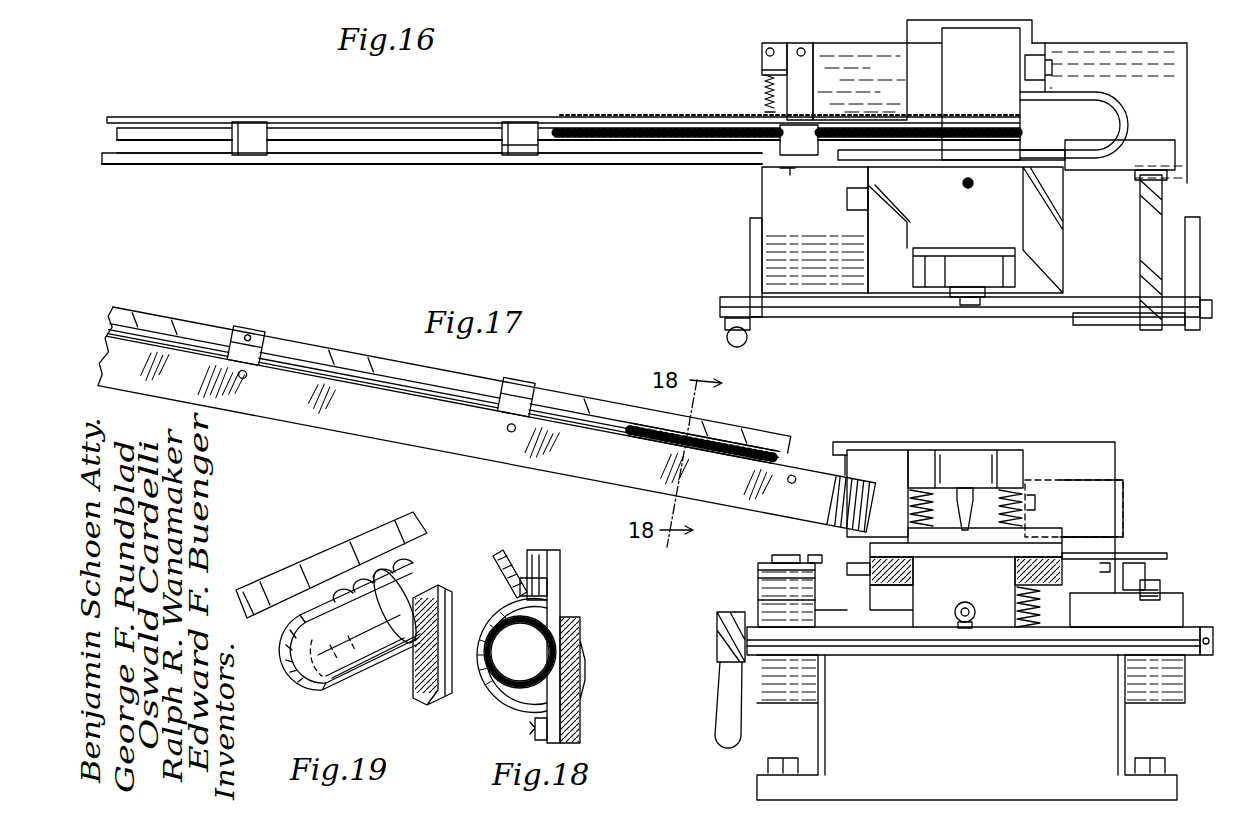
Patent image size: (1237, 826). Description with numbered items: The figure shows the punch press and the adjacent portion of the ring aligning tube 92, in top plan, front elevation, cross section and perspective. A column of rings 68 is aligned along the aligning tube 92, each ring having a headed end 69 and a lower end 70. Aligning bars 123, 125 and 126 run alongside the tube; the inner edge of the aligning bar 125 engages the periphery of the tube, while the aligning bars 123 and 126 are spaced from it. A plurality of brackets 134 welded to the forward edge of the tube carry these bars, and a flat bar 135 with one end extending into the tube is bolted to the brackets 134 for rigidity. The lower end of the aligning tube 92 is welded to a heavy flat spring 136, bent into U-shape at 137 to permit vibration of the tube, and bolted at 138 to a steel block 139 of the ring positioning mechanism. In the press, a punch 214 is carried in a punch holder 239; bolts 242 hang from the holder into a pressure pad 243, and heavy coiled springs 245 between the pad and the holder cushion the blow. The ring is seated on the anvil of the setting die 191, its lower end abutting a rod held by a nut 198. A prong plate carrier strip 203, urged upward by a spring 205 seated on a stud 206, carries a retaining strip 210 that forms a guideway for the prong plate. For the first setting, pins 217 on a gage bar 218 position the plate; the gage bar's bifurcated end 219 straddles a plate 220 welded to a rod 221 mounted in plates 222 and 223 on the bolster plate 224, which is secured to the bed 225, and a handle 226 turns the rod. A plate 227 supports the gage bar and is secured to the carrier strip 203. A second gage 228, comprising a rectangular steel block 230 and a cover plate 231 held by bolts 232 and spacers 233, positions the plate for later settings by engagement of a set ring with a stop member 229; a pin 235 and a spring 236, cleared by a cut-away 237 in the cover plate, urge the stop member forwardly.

In FIG. 16, the ring 68 is at (628, 117).
In FIG. 19, the ring 68 is at (340, 686).
In FIG. 18, the ring 68 is at (494, 697).
In FIG. 19, the headed end 69 is at (352, 598).
In FIG. 18, the headed end 69 is at (550, 588).
In FIG. 16, the lower end 70 is at (610, 140).
In FIG. 17, the lower end 70 is at (653, 432).
In FIG. 16, the aligning tube 92 is at (405, 138).
In FIG. 17, the aligning tube 92 is at (568, 410).
In FIG. 19, the aligning tube 92 is at (376, 658).
In FIG. 18, the aligning tube 92 is at (496, 648).
In FIG. 16, the aligning bar 123 is at (200, 165).
In FIG. 17, the aligning bar 123 is at (205, 335).
In FIG. 18, the aligning bar 125 is at (535, 738).
In FIG. 16, the aligning bar 126 is at (327, 128).
In FIG. 17, the aligning bar 126 is at (330, 356).
In FIG. 19, the aligning bar 126 is at (330, 552).
In FIG. 18, the aligning bar 126 is at (508, 578).
In FIG. 16, the brackets 134 is at (251, 122).
In FIG. 17, the brackets 134 is at (258, 338).
In FIG. 18, the brackets 134 is at (560, 580).
In FIG. 16, the flat bar 135 is at (412, 165).
In FIG. 17, the flat bar 135 is at (296, 410).
In FIG. 19, the flat bar 135 is at (440, 585).
In FIG. 18, the flat bar 135 is at (580, 690).
In FIG. 16, the flat spring 136 is at (885, 162).
In FIG. 17, the flat spring 136 is at (865, 452).
In FIG. 16, the U-shaped bend 137 is at (1115, 110).
In FIG. 16, the bolt 138 is at (1106, 113).
In FIG. 17, the bolt 138 is at (1038, 500).
In FIG. 16, the steel block 139 is at (1000, 108).
In FIG. 17, the steel block 139 is at (1060, 445).
In FIG. 16, the setting die 191 is at (935, 290).
In FIG. 17, the setting die 191 is at (973, 656).
In FIG. 16, the nut 198 is at (972, 300).
In FIG. 17, the nut 198 is at (963, 630).
In FIG. 16, the prong plate carrier strip 203 is at (868, 250).
In FIG. 17, the prong plate carrier strip 203 is at (890, 571).
In FIG. 17, the spring 205 is at (1038, 570).
In FIG. 17, the stud 206 is at (1032, 630).
In FIG. 16, the retaining strip 210 is at (848, 200).
In FIG. 17, the retaining strip 210 is at (848, 568).
In FIG. 16, the punch 214 is at (965, 188).
In FIG. 17, the punch 214 is at (960, 532).
In FIG. 16, the pins 217 is at (1157, 198).
In FIG. 17, the pins 217 is at (1140, 562).
In FIG. 16, the gage bar 218 is at (1145, 250).
In FIG. 17, the gage bar 218 is at (1155, 582).
In FIG. 17, the bifurcated end 219 is at (1140, 597).
In FIG. 16, the plate 220 is at (1093, 326).
In FIG. 17, the plate 220 is at (1126, 612).
In FIG. 16, the rod 221 is at (1072, 310).
In FIG. 17, the rod 221 is at (990, 643).
In FIG. 16, the plate 222 is at (752, 238).
In FIG. 17, the plate 222 is at (717, 638).
In FIG. 16, the plate 223 is at (1192, 331).
In FIG. 17, the plate 223 is at (1195, 652).
In FIG. 16, the bolster plate 224 is at (850, 297).
In FIG. 17, the bed 225 is at (830, 738).
In FIG. 16, the handle 226 is at (748, 340).
In FIG. 17, the handle 226 is at (717, 730).
In FIG. 16, the plate 227 is at (1120, 155).
In FIG. 17, the plate 227 is at (1120, 550).
In FIG. 16, the gage 228 is at (762, 62).
In FIG. 17, the gage 228 is at (770, 590).
In FIG. 16, the stop member 229 is at (790, 176).
In FIG. 17, the stop member 229 is at (790, 556).
In FIG. 17, the rectangular steel block 230 is at (758, 600).
In FIG. 16, the cover plate 231 is at (805, 88).
In FIG. 17, the cover plate 231 is at (770, 560).
In FIG. 16, the bolts 232 is at (768, 50).
In FIG. 17, the bolts 232 is at (815, 562).
In FIG. 17, the spacers 233 is at (758, 568).
In FIG. 16, the pin 235 is at (765, 71).
In FIG. 16, the spring 236 is at (765, 82).
In FIG. 16, the cut-away 237 is at (792, 62).
In FIG. 16, the punch holder 239 is at (973, 256).
In FIG. 17, the punch holder 239 is at (955, 450).
In FIG. 17, the bolts 242 is at (905, 490).
In FIG. 17, the pressure pad 243 is at (990, 533).
In FIG. 17, the coiled springs 245 is at (944, 508).